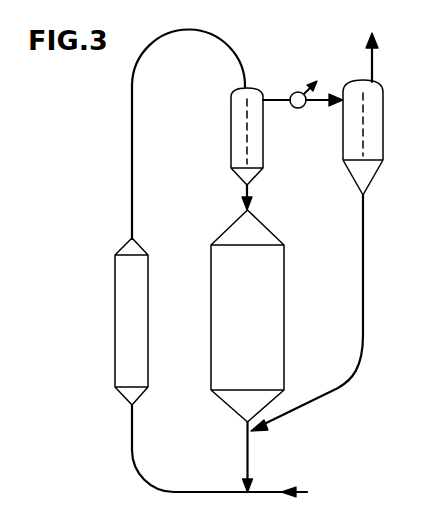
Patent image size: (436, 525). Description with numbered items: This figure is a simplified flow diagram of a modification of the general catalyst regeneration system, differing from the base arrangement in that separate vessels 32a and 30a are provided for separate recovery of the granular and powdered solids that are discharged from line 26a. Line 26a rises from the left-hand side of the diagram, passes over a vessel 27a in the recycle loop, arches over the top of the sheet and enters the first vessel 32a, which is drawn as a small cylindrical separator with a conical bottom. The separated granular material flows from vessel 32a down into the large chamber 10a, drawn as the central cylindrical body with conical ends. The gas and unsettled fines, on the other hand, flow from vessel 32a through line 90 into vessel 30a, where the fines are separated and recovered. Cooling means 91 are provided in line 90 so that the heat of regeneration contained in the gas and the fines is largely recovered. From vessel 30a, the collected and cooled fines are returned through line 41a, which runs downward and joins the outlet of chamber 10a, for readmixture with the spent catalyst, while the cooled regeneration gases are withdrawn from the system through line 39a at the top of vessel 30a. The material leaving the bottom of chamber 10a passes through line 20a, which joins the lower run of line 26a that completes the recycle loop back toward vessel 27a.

The chamber 10a is at (286, 292).
The line 20a is at (251, 461).
The line 26a is at (189, 31).
The vessel 27a is at (149, 305).
The vessel 30a is at (385, 151).
The vessel 32a is at (264, 153).
The line 39a is at (372, 72).
The line 41a is at (366, 289).
The line 90 is at (273, 99).
The cooling means 91 is at (298, 92).